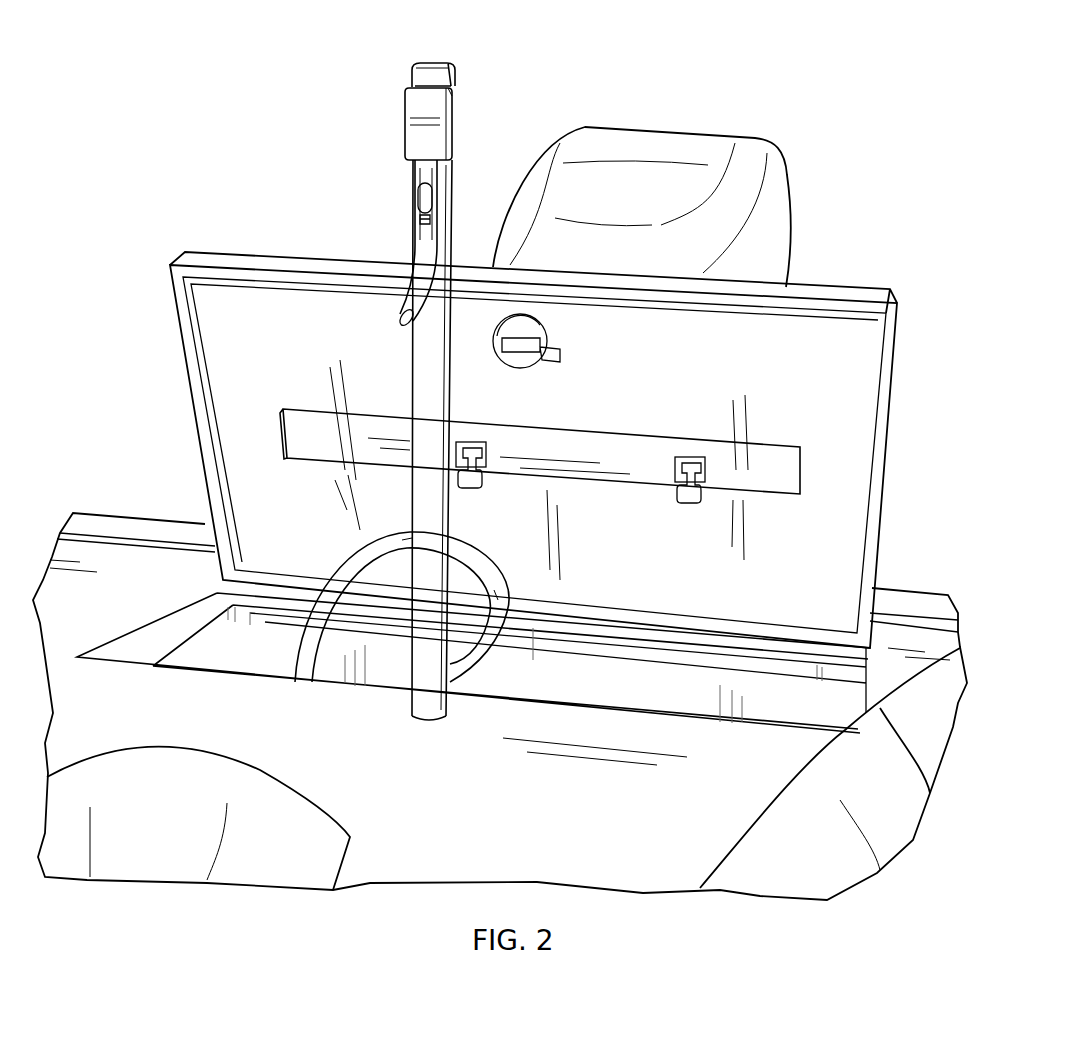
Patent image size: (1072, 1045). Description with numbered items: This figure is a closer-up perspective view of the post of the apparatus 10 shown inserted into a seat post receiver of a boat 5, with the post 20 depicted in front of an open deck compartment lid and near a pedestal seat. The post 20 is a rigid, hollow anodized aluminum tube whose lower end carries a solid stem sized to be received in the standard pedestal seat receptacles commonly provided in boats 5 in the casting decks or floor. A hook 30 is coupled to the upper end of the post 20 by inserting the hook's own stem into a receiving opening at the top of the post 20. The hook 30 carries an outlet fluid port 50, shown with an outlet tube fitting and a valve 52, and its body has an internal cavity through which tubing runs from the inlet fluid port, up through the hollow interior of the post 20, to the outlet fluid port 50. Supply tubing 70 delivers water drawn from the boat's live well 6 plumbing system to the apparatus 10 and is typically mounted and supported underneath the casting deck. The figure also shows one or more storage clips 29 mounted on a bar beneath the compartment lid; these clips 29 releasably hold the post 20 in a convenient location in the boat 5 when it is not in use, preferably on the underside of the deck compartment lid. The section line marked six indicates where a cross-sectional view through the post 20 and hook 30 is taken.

The boat 5 is at (948, 600).
The live well 6 is at (452, 42).
The apparatus 10 is at (322, 130).
The post 20 is at (413, 372).
The storage clips 29 is at (487, 456).
The hook 30 is at (507, 104).
The outlet fluid port 50 is at (365, 239).
The valve 52 is at (420, 196).
The supply tubing 70 is at (310, 652).